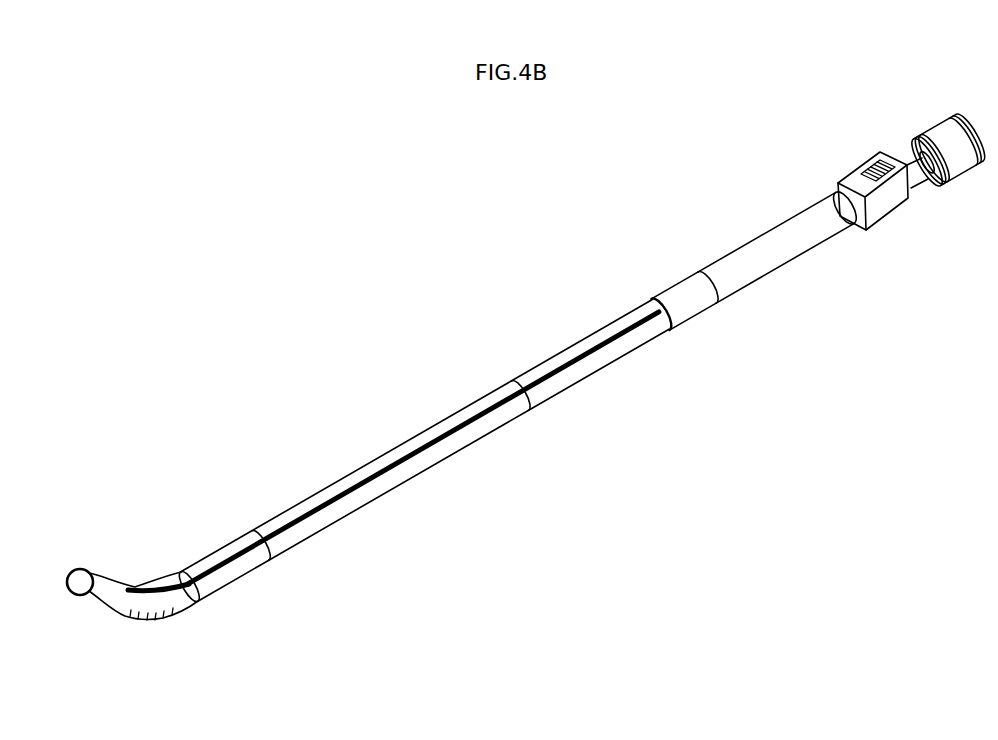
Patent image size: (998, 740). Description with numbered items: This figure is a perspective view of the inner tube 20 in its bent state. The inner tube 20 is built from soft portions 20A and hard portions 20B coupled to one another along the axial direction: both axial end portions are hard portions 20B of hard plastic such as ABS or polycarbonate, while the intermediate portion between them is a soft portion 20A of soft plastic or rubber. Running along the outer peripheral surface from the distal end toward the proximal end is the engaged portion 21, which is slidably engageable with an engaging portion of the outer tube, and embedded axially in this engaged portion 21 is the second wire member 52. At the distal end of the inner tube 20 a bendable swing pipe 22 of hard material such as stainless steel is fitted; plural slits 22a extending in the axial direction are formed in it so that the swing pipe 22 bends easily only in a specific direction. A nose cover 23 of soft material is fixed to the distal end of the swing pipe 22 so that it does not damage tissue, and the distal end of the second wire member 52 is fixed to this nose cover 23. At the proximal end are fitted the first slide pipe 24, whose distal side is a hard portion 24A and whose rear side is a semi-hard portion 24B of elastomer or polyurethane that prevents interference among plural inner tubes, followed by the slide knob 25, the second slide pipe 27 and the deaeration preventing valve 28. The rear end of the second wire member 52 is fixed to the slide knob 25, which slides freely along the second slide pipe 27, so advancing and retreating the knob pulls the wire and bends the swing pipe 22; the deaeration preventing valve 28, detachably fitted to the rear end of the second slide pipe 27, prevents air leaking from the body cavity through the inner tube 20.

The inner tube 20 is at (425, 464).
The soft portion 20A is at (390, 491).
The hard portion 20B is at (630, 350).
The engaged portion 21 is at (343, 476).
The swing pipe 22 is at (127, 585).
The slits 22a is at (162, 622).
The nose cover 23 is at (91, 597).
The first slide pipe 24 is at (755, 259).
The hard portion 24A is at (693, 316).
The semi-hard portion 24B is at (768, 274).
The slide knob 25 is at (897, 212).
The second slide pipe 27 is at (920, 189).
The deaeration preventing valve 28 is at (938, 128).
The second wire member 52 is at (155, 585).